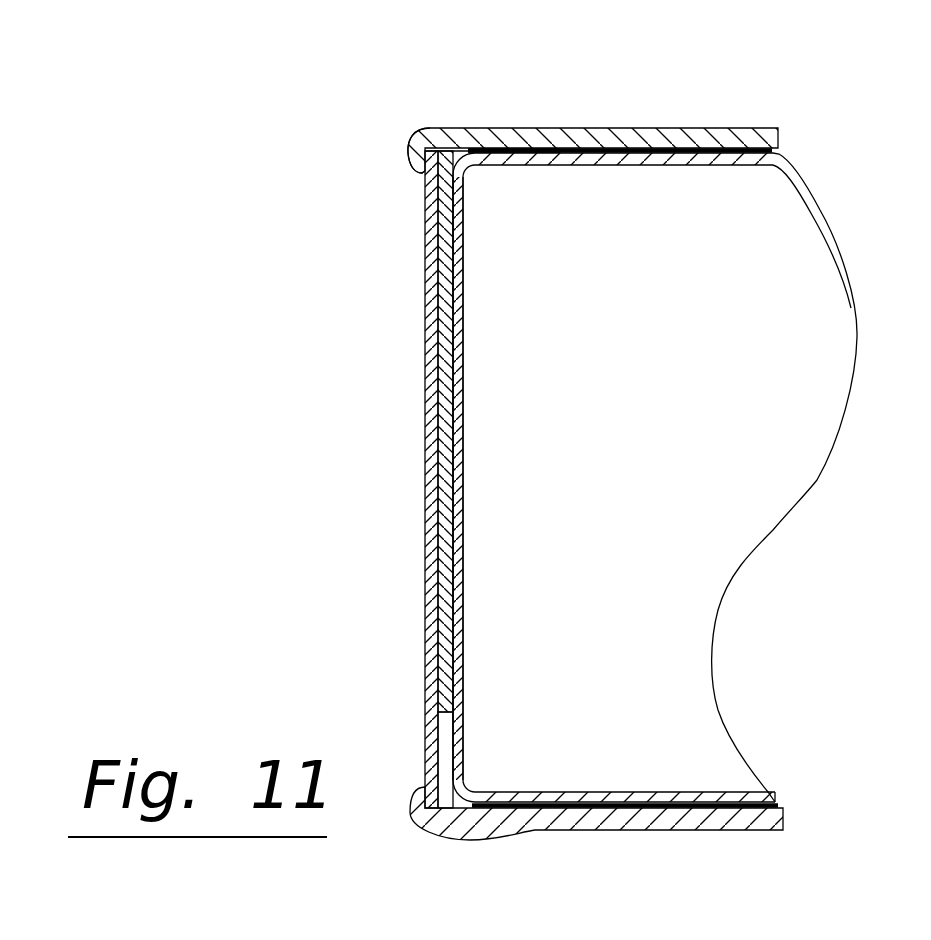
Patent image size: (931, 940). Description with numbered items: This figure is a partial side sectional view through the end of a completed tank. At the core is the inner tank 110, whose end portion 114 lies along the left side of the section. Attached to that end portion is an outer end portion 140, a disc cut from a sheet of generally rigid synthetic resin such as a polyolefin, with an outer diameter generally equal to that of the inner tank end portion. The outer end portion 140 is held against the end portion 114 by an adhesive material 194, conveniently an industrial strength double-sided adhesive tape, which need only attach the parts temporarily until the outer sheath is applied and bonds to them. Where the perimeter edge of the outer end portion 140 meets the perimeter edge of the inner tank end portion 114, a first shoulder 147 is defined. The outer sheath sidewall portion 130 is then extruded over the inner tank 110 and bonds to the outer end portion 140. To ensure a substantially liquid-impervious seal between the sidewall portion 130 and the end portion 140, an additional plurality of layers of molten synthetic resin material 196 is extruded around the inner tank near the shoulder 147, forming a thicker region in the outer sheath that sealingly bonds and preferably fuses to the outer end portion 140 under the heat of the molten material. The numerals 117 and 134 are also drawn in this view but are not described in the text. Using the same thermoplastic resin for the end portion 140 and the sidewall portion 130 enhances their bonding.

The inner tank 110 is at (686, 155).
The end portion of the inner tank 114 is at (464, 512).
The end of sealing strip 117 is at (520, 149).
The outer sheath sidewall portion 130 is at (605, 127).
The sealing strip 134 is at (562, 128).
The outer end portion 140 is at (426, 472).
The first shoulder 147 is at (413, 148).
The adhesive material 194 is at (441, 571).
The additional layers of molten synthetic resin material 196 is at (430, 130).